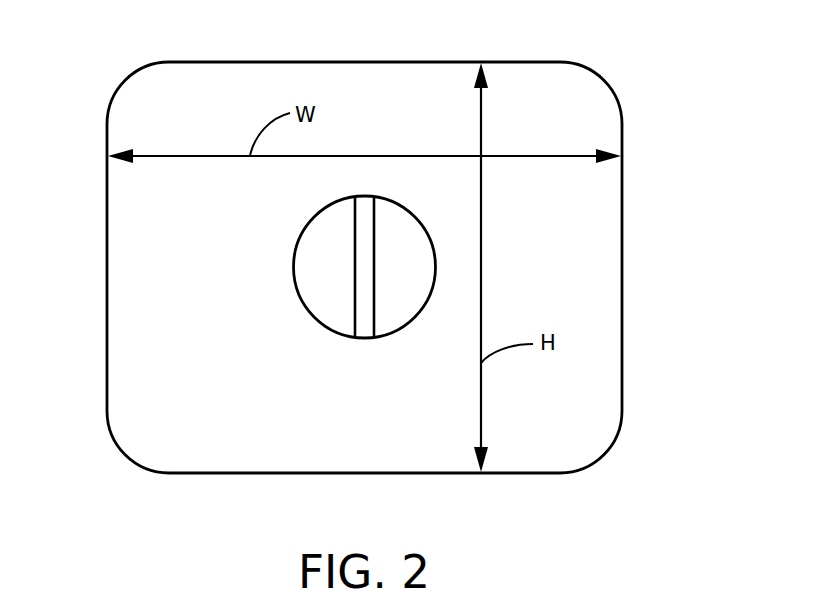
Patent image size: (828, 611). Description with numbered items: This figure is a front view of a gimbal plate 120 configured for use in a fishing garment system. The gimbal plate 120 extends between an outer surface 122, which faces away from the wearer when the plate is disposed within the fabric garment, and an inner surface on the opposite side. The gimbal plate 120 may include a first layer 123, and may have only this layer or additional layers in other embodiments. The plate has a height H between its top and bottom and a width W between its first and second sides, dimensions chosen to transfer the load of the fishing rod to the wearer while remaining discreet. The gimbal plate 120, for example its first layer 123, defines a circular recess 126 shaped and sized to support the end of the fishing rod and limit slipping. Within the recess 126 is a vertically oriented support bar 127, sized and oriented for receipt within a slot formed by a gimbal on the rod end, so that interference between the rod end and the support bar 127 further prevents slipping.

The gimbal plate 120 is at (607, 90).
The outer surface 122 is at (147, 235).
The first layer 123 is at (583, 243).
The recess 126 is at (320, 283).
The support bar 127 is at (365, 318).